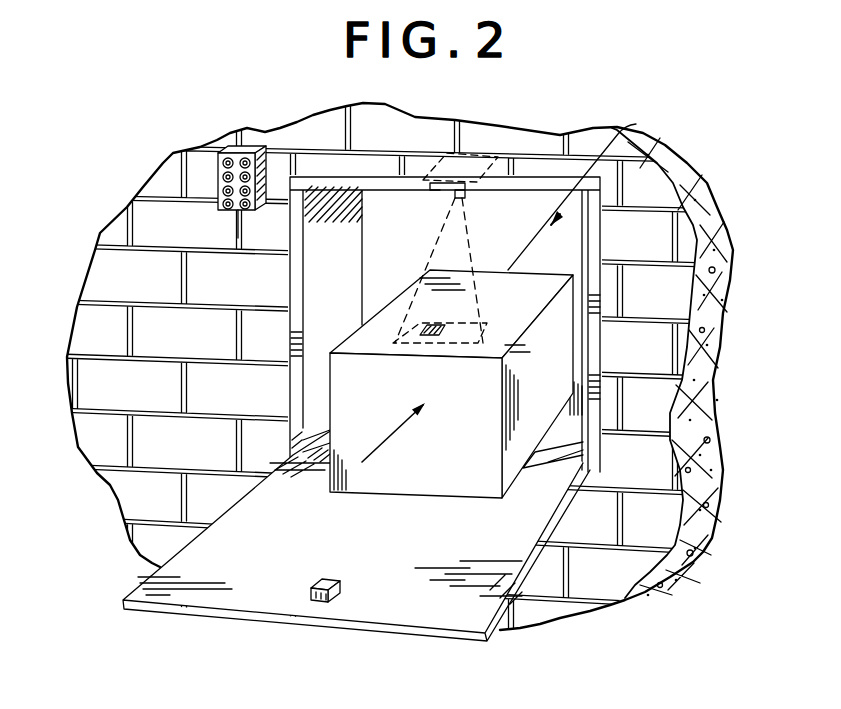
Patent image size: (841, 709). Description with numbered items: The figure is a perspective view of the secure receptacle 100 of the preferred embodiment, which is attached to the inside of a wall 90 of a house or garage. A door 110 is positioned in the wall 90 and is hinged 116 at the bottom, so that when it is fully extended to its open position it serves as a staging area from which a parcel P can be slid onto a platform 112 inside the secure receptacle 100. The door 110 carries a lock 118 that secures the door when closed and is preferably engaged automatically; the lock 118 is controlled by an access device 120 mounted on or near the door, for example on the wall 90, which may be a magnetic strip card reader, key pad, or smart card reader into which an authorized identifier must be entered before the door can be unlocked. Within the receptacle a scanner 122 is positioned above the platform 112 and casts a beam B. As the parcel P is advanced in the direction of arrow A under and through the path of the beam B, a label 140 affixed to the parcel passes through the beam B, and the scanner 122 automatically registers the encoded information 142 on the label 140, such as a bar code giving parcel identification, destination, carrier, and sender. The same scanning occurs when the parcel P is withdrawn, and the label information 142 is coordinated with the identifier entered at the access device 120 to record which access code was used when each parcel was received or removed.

The wall 90 is at (127, 210).
The secure receptacle 100 is at (595, 189).
The door 110 is at (142, 598).
The platform 112 is at (572, 257).
The hinge 116 is at (572, 458).
The lock 118 is at (317, 600).
The access device 120 is at (243, 150).
The scanner 122 is at (472, 142).
The label 140 is at (462, 337).
The information 142 is at (425, 328).
The parcel P is at (560, 357).
The arrow A is at (393, 430).
The beam B is at (447, 245).